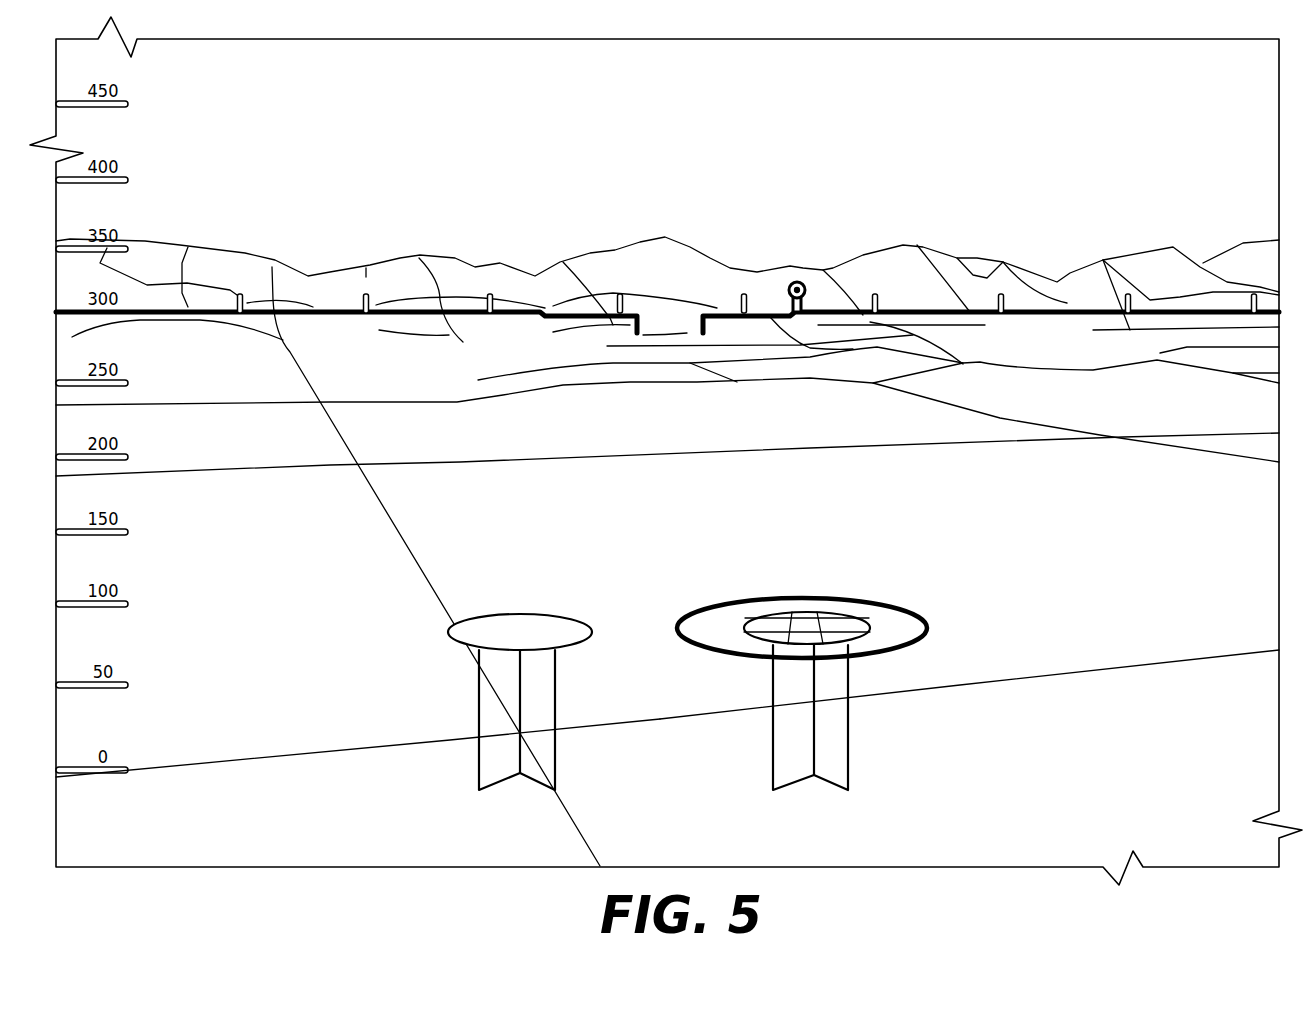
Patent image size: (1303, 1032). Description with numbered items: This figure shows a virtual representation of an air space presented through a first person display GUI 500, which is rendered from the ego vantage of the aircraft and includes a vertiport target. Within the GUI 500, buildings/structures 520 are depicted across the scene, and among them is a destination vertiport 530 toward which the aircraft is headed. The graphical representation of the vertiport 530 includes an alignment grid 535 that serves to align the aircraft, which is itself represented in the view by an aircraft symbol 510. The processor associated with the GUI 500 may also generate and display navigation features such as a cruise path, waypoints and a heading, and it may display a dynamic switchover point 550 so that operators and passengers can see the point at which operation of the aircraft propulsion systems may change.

The first person display GUI 500 is at (272, 227).
The aircraft symbol 510 is at (552, 359).
The buildings/structures 520 is at (630, 761).
The destination vertiport 530 is at (867, 620).
The alignment grid 535 is at (767, 612).
The dynamic switchover point 550 is at (947, 669).